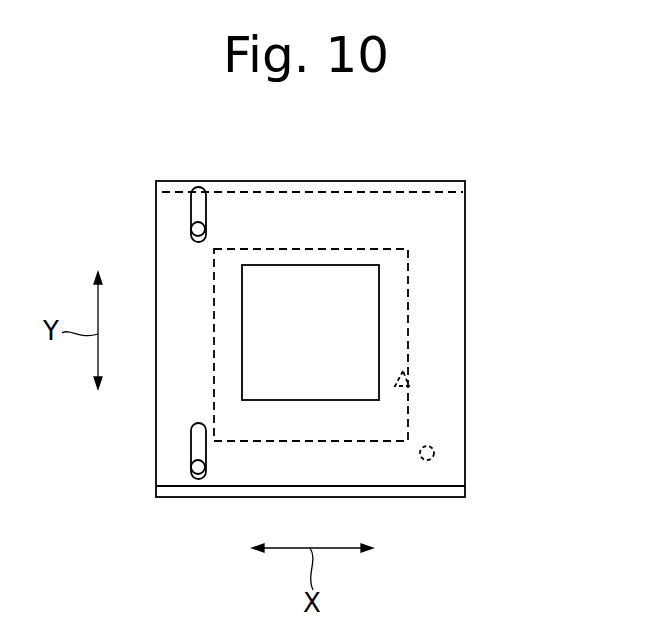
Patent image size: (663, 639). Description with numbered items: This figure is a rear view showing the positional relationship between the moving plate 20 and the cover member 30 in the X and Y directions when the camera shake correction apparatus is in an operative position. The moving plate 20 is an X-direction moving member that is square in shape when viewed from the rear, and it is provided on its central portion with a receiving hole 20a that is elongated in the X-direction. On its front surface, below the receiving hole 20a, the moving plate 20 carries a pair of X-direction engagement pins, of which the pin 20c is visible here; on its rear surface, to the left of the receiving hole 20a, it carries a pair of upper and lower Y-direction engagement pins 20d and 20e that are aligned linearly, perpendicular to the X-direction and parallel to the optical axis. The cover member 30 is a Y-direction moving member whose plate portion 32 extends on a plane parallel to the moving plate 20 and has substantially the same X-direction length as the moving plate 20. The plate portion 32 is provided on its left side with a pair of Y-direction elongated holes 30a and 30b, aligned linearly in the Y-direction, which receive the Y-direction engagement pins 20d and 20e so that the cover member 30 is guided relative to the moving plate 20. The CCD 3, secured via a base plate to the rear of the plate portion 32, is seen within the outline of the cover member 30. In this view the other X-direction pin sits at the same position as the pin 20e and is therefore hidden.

The CCD 3 is at (360, 341).
The moving plate 20 is at (415, 497).
The receiving hole 20a is at (409, 385).
The X-direction engagement pin 20c is at (434, 450).
The Y-direction engagement pin 20d is at (192, 229).
The Y-direction engagement pin 20e is at (192, 467).
The cover member 30 is at (382, 182).
The Y-direction elongated hole 30a is at (198, 214).
The Y-direction elongated hole 30b is at (198, 443).
The plate portion 32 is at (447, 288).